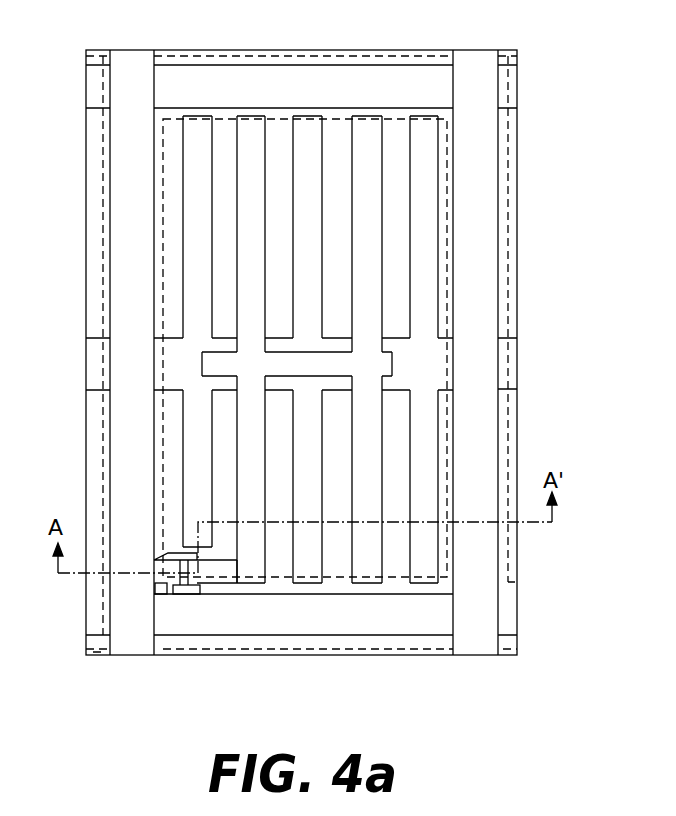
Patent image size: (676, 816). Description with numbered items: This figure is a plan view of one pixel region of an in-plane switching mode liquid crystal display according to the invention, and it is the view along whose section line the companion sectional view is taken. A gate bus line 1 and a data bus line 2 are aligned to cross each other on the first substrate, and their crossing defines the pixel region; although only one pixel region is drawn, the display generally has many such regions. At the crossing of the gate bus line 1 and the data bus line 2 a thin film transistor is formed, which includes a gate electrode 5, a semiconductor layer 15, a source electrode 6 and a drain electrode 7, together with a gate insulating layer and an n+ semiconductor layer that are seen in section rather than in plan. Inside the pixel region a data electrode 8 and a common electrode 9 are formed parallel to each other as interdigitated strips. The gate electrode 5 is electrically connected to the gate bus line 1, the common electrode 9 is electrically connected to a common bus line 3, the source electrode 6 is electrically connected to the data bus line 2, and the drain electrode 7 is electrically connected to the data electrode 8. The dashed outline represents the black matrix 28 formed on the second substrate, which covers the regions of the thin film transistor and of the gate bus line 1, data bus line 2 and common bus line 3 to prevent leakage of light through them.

The gate bus line 1 is at (508, 607).
The data bus line 2 is at (470, 637).
The common bus line 3 is at (512, 382).
The gate electrode 5 is at (178, 598).
The source electrode 6 is at (158, 590).
The drain electrode 7 is at (197, 580).
The data electrode 8 is at (366, 572).
The common electrode 9 is at (300, 576).
The semiconductor layer 15 is at (166, 556).
The black matrix 28 is at (507, 435).